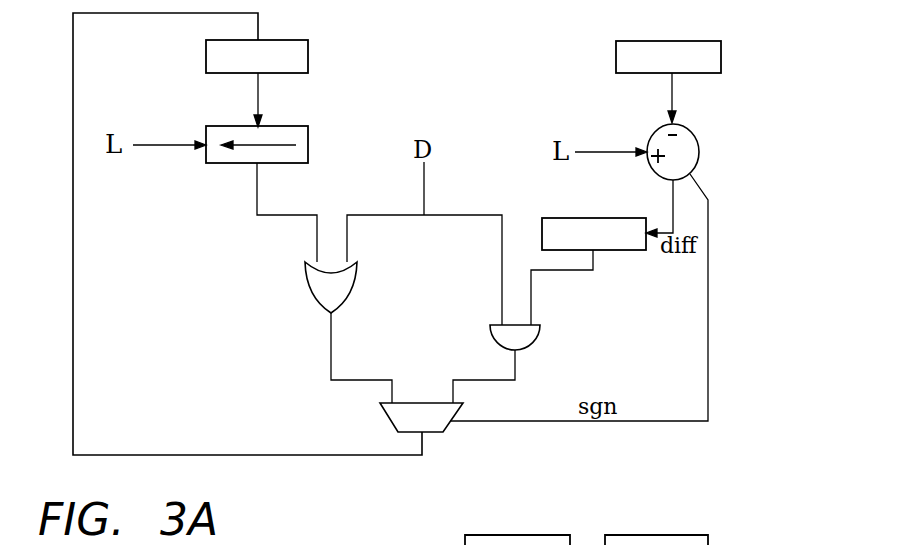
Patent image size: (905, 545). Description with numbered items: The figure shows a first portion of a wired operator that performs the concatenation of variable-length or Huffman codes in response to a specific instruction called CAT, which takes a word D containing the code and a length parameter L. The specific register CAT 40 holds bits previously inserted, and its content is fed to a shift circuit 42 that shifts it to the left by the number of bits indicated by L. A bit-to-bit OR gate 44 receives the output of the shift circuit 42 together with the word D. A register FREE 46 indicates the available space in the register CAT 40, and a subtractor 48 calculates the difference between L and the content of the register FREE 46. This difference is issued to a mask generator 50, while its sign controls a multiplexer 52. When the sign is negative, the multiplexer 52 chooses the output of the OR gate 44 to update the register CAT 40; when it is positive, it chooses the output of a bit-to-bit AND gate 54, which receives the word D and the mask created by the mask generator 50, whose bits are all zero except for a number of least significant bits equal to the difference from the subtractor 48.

The register CAT 40 is at (309, 60).
The shift circuit 42 is at (308, 160).
The bit-to-bit OR gate 44 is at (348, 282).
The register FREE 46 is at (706, 62).
The subtractor 48 is at (696, 152).
The mask generator 50 is at (562, 218).
The multiplexer 52 is at (392, 419).
The bit-to-bit AND gate 54 is at (524, 341).